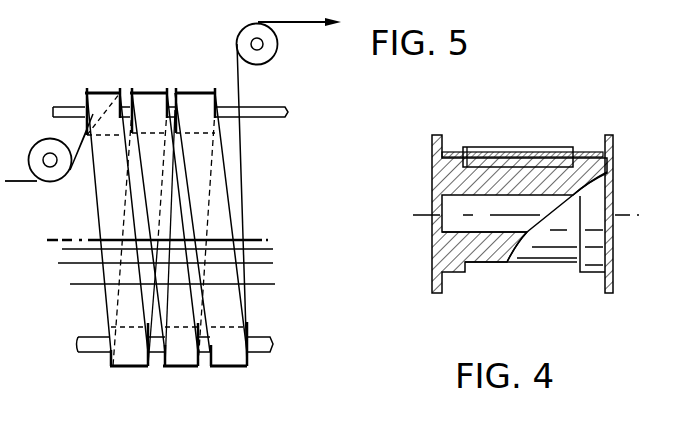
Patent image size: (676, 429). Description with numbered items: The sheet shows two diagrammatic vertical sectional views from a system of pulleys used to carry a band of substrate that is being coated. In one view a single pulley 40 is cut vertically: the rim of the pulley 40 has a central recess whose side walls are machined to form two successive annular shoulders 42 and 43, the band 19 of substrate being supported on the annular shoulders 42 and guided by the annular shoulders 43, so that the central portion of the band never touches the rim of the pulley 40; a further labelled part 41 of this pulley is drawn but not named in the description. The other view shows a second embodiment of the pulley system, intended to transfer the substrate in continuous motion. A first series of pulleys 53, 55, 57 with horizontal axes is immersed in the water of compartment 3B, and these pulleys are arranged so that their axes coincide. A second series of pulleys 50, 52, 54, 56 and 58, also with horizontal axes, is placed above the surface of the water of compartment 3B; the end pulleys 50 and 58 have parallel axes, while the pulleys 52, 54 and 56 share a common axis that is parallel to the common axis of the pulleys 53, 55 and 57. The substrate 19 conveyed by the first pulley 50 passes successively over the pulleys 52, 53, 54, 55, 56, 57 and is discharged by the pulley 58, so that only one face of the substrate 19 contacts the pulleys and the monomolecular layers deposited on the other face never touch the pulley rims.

In FIG. 5, the band of substrate 19 is at (297, 25).
In FIG. 4, the band of substrate 19 is at (577, 143).
In FIG. 5, the compartment 3B is at (251, 238).
In FIG. 4, the pulley 40 is at (443, 130).
In FIG. 4, the conical bore member 41 is at (507, 262).
In FIG. 4, the annular shoulders 42 is at (465, 273).
In FIG. 4, the annular shoulders 43 is at (442, 287).
In FIG. 5, the first pulley 50 is at (50, 183).
In FIG. 5, the pulley 52 is at (107, 92).
In FIG. 5, the pulley 53 is at (127, 361).
In FIG. 5, the pulley 54 is at (147, 97).
In FIG. 5, the pulley 55 is at (178, 355).
In FIG. 5, the pulley 56 is at (198, 100).
In FIG. 5, the pulley 57 is at (228, 352).
In FIG. 5, the end pulley 58 is at (272, 48).